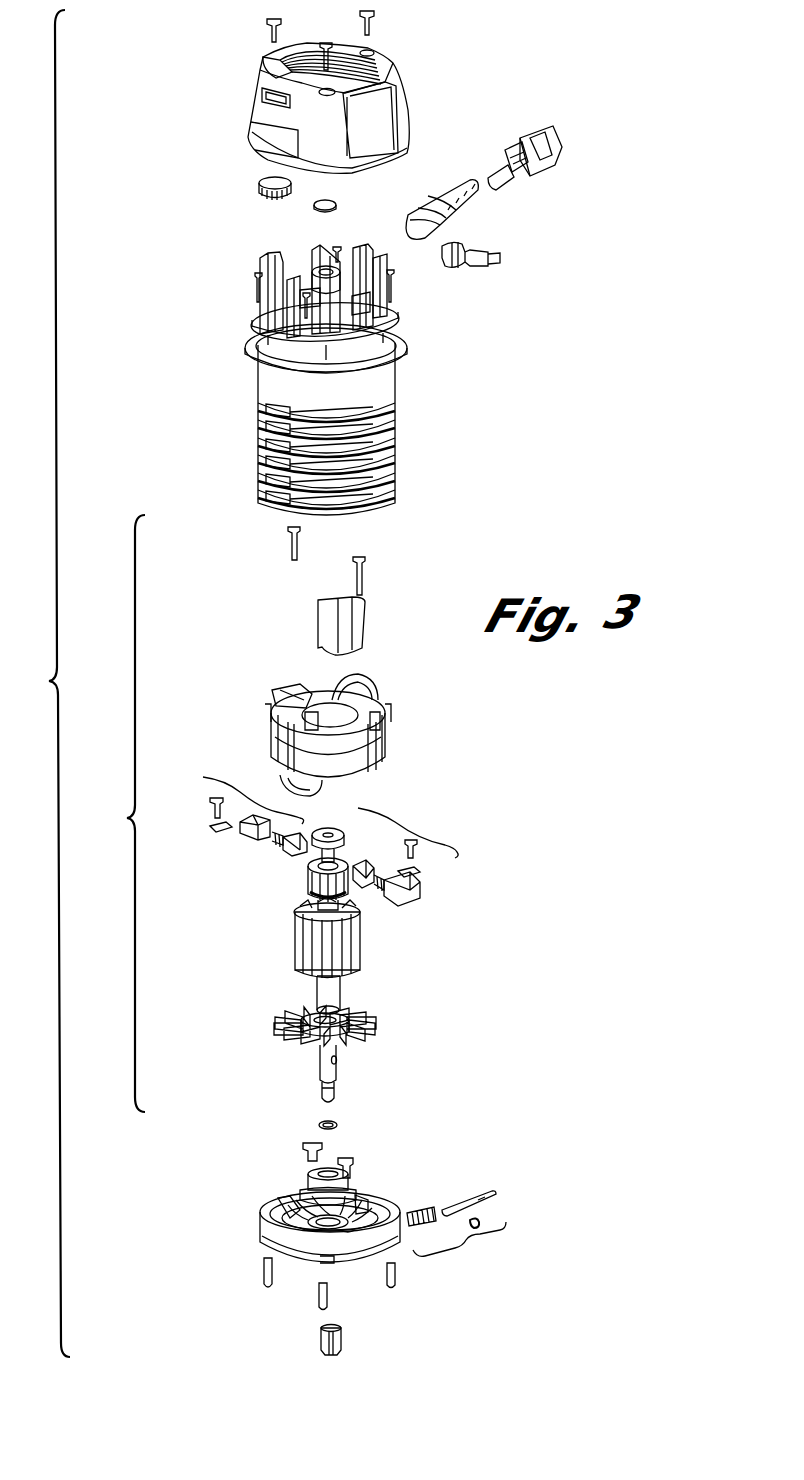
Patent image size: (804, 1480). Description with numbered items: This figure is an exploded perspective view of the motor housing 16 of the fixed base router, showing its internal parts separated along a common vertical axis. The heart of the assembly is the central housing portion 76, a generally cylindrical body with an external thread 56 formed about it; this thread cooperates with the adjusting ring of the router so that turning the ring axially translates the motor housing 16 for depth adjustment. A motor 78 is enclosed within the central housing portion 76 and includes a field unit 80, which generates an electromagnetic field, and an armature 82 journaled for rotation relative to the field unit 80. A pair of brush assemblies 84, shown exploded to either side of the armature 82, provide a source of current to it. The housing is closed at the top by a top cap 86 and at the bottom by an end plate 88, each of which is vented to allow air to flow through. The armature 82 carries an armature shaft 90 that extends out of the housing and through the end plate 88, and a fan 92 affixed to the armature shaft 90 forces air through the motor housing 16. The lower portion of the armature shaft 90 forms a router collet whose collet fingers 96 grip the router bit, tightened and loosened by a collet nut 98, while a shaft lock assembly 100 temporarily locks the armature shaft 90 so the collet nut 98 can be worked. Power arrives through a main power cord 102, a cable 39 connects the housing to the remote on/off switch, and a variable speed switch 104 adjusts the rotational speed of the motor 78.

The motor housing 16 is at (44, 683).
The cable 39 is at (490, 258).
The external thread 56 is at (396, 403).
The central housing portion 76 is at (256, 385).
The motor 78 is at (120, 813).
The field unit 80 is at (388, 732).
The armature 82 is at (295, 940).
The brush assemblies 84 is at (325, 818).
The top cap 86 is at (405, 100).
The end plate 88 is at (265, 1228).
The armature shaft 90 is at (345, 995).
The fan 92 is at (382, 1022).
The collet fingers 96 is at (340, 1090).
The collet nut 98 is at (318, 1336).
The shaft lock assembly 100 is at (456, 1236).
The main power cord 102 is at (560, 175).
The variable speed switch 104 is at (258, 187).